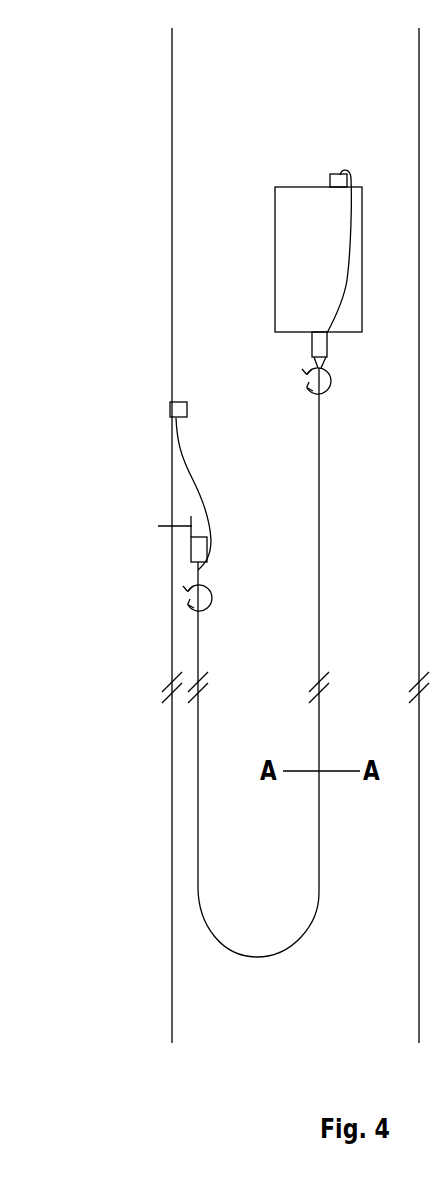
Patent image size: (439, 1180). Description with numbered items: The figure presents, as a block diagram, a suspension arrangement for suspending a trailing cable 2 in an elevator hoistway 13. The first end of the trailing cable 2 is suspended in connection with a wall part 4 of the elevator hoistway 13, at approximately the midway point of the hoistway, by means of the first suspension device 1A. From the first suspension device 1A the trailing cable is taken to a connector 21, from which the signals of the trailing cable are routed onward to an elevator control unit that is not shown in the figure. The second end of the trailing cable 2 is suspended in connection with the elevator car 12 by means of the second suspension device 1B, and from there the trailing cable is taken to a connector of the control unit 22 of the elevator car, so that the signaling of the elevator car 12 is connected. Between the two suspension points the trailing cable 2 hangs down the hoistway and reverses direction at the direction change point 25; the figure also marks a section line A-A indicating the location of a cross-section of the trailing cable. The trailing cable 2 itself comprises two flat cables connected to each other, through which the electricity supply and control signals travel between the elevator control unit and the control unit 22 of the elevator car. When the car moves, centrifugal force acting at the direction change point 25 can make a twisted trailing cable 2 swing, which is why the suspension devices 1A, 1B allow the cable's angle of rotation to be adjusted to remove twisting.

The trailing cable 2 is at (197, 768).
The wall part of the elevator hoistway 4 is at (170, 498).
The elevator car 12 is at (336, 272).
The elevator hoistway 13 is at (388, 609).
The connector 21 is at (170, 407).
The control unit of the elevator car 22 is at (337, 173).
The first suspension device 1A is at (190, 550).
The second suspension device 1B is at (310, 347).
The direction change point of the trailing cable 25 is at (287, 950).